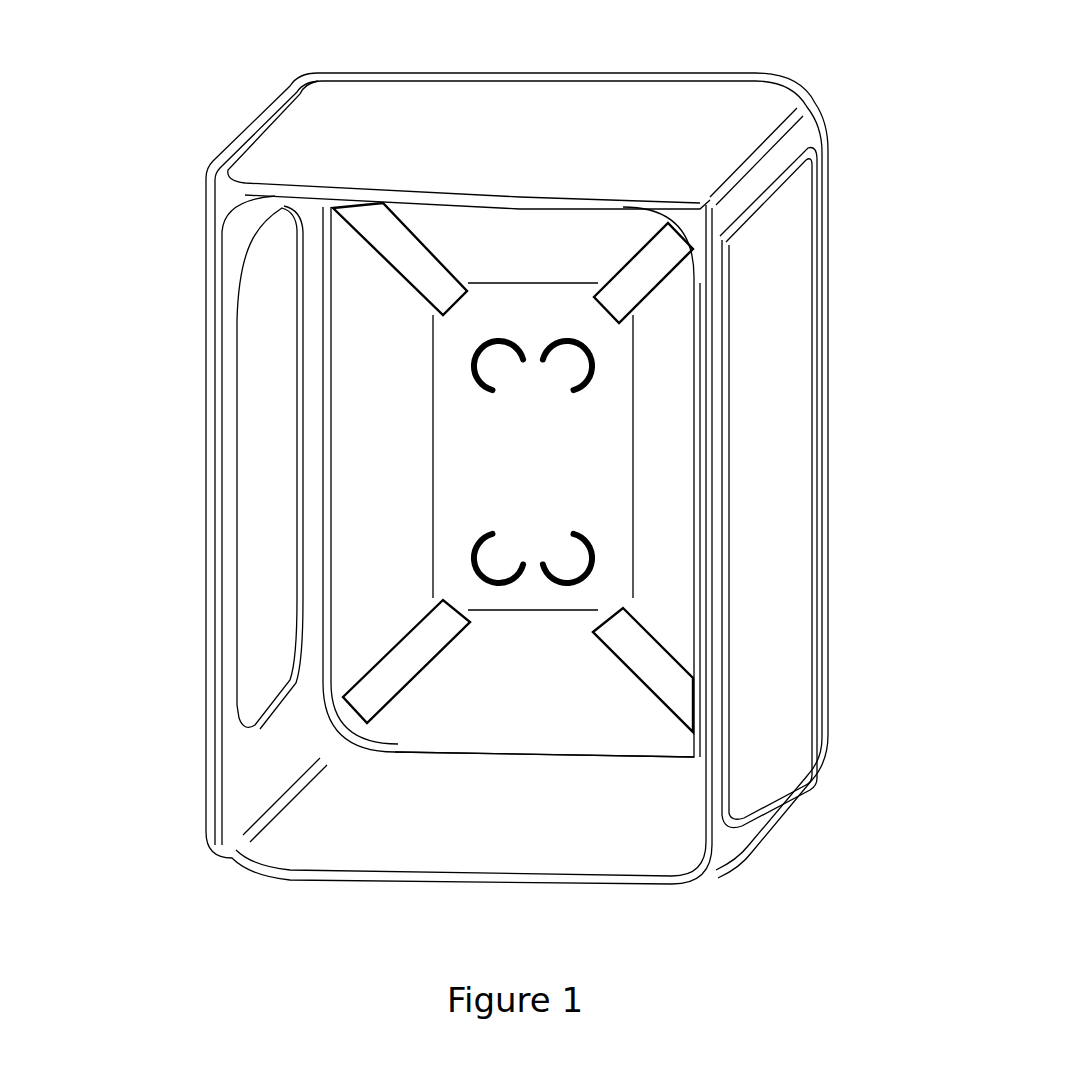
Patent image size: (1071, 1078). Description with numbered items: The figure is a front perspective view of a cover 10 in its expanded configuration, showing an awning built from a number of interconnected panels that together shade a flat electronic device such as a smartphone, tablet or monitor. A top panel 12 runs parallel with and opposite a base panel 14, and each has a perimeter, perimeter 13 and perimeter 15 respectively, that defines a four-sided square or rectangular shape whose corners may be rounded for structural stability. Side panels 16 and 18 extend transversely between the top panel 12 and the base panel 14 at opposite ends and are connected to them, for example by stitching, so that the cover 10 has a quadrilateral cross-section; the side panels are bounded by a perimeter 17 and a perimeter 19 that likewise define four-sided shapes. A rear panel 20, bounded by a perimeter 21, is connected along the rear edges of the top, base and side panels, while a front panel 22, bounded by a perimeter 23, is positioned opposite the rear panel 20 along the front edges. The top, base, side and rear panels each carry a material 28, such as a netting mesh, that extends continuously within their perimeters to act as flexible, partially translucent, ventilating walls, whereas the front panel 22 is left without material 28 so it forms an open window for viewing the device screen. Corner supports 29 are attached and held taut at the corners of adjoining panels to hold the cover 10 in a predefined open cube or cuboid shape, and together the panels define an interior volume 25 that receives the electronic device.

The cover 10 is at (162, 78).
The top panel 12 is at (572, 143).
The perimeter 13 is at (505, 105).
The base panel 14 is at (459, 807).
The perimeter 15 is at (260, 813).
The side panel 16 is at (298, 423).
The perimeter 17 is at (215, 465).
The side panel 18 is at (832, 348).
The perimeter 19 is at (823, 398).
The rear panel 20 is at (585, 706).
The perimeter 21 is at (617, 762).
The front panel 22 is at (363, 303).
The perimeter 23 is at (254, 240).
The interior volume 25 is at (383, 386).
The material 28 is at (660, 137).
The corner supports 29 is at (693, 863).